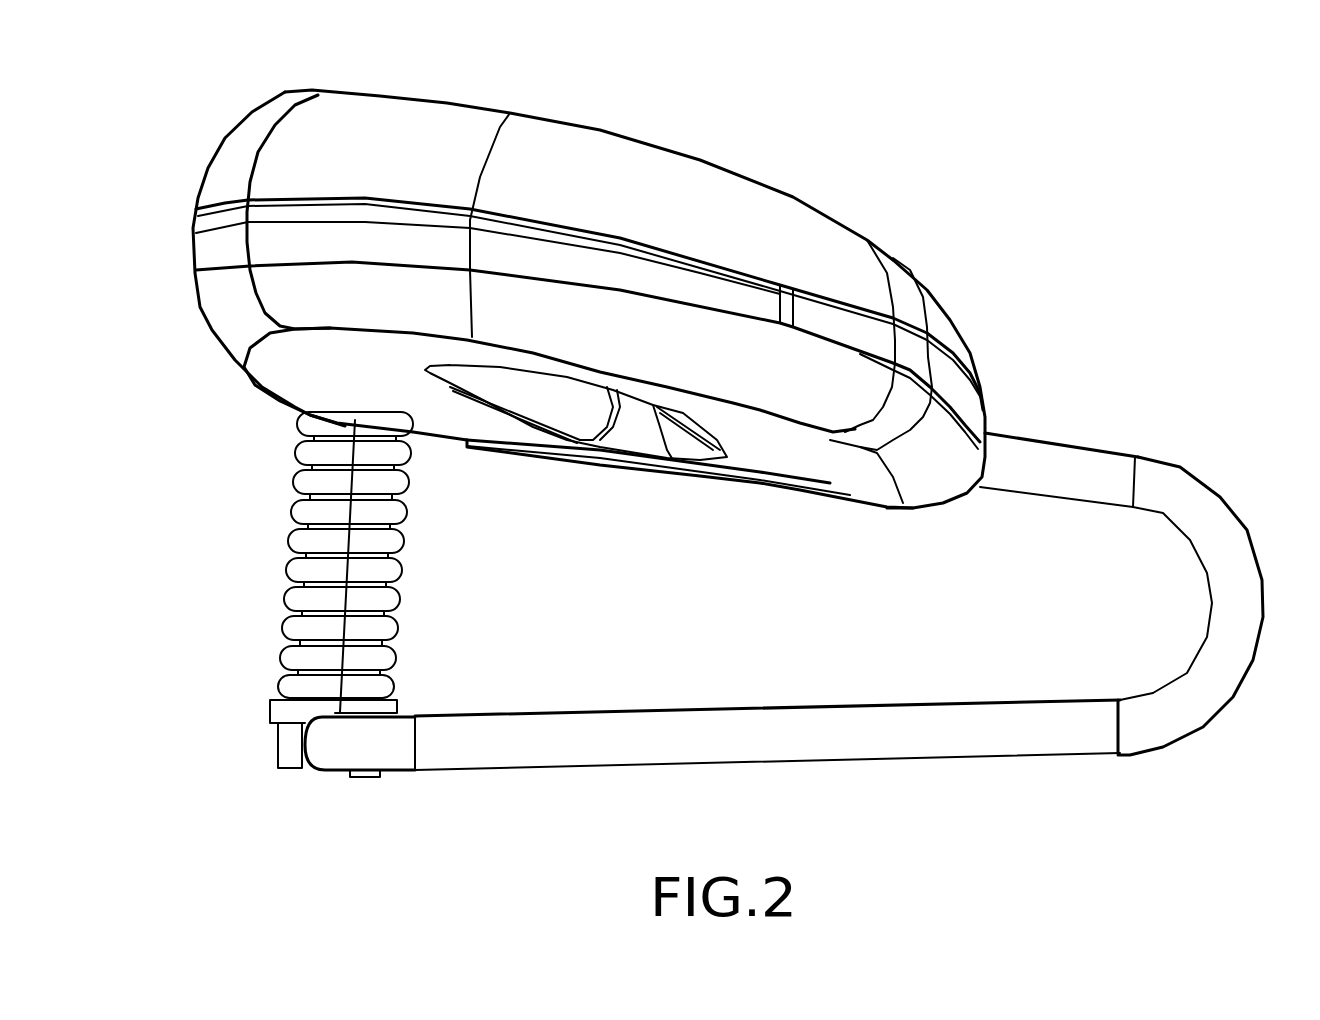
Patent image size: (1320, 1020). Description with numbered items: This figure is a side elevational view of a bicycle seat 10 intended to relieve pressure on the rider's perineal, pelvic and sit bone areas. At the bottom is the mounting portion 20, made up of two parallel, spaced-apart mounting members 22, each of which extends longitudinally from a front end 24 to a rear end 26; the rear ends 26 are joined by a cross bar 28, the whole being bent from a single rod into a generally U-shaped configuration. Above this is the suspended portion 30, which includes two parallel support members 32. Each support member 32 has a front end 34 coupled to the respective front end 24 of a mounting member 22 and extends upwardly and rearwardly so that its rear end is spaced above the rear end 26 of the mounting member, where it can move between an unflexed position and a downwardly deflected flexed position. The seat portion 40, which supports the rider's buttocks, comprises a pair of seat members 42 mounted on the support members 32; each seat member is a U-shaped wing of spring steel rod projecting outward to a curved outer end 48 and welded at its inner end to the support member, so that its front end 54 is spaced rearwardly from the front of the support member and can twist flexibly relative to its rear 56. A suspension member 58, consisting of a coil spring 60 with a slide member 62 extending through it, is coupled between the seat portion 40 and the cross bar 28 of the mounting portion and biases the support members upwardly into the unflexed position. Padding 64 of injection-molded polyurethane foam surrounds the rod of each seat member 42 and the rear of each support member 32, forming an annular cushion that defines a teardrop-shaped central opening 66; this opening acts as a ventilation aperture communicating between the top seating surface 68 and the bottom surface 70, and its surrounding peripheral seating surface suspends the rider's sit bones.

The seat 10 is at (966, 172).
The mounting portion 20 is at (724, 777).
The mounting member 22 is at (767, 757).
The front end 24 is at (1148, 746).
The rear end 26 is at (404, 785).
The cross bar 28 is at (342, 772).
The suspended portion 30 is at (1121, 575).
The support member 32 is at (1047, 443).
The front end 34 is at (1179, 465).
The seat portion 40 is at (993, 295).
The seat member 42 is at (643, 185).
The curved outer end 48 is at (547, 177).
The front end 54 is at (955, 383).
The rear 56 is at (516, 263).
The suspension member 58 is at (403, 562).
The coil spring 60 is at (440, 578).
The slide member 62 is at (408, 482).
The padding 64 is at (833, 323).
The central opening 66 is at (635, 433).
The top seating surface 68 is at (791, 198).
The bottom surface 70 is at (578, 446).